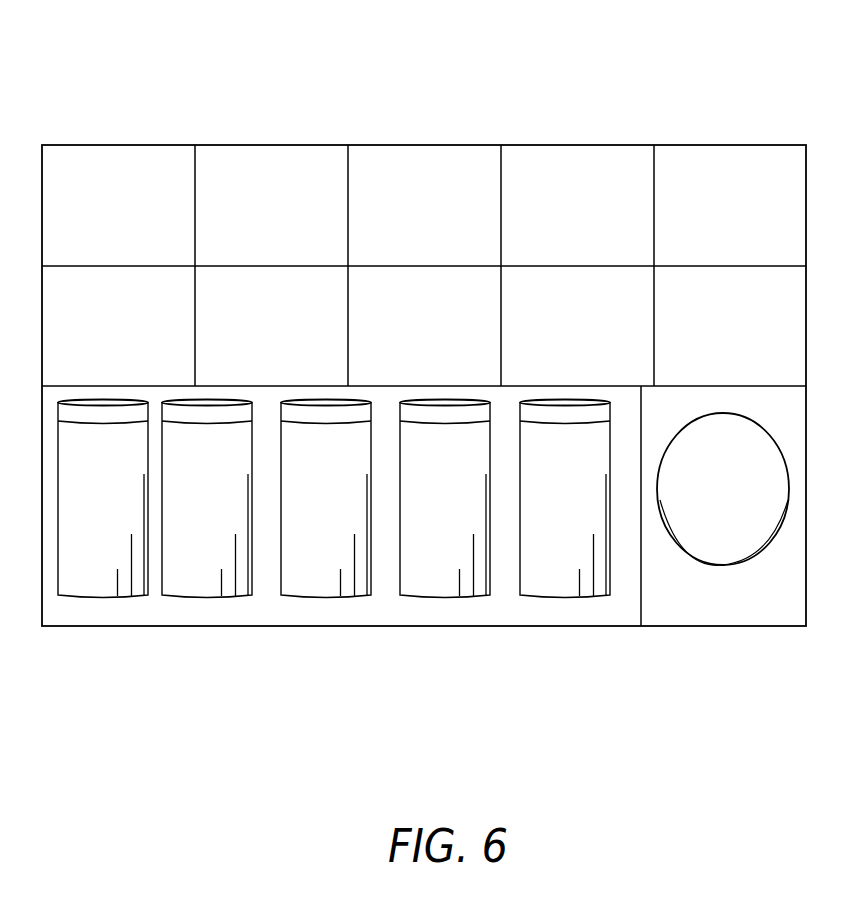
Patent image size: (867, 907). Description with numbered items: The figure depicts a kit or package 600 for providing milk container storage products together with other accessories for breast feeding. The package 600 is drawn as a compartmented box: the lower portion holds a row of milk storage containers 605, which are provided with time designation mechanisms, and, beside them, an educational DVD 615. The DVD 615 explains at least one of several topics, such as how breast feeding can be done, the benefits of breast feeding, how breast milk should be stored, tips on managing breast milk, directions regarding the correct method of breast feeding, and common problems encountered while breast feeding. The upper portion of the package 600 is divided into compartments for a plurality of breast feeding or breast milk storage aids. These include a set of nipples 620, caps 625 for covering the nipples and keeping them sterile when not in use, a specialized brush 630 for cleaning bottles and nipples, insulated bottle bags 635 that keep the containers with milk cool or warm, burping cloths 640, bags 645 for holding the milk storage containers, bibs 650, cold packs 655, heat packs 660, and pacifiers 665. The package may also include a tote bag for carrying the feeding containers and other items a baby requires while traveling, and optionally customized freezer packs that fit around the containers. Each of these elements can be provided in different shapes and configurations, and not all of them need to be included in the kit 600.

The kit or package 600 is at (512, 48).
The milk storage containers 605 is at (445, 597).
The educational DVD 615 is at (723, 566).
The set of nipples 620 is at (94, 222).
The caps 625 is at (247, 222).
The specialized brush 630 is at (400, 222).
The insulated bottle bags 635 is at (553, 222).
The burping cloths 640 is at (706, 222).
The bags for holding milk storage containers 645 is at (94, 344).
The bibs 650 is at (247, 344).
The cold packs 655 is at (400, 344).
The heat packs 660 is at (553, 344).
The pacifiers 665 is at (706, 344).